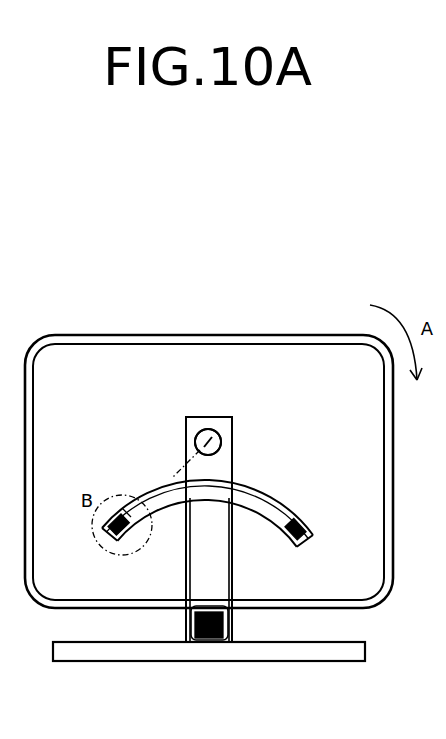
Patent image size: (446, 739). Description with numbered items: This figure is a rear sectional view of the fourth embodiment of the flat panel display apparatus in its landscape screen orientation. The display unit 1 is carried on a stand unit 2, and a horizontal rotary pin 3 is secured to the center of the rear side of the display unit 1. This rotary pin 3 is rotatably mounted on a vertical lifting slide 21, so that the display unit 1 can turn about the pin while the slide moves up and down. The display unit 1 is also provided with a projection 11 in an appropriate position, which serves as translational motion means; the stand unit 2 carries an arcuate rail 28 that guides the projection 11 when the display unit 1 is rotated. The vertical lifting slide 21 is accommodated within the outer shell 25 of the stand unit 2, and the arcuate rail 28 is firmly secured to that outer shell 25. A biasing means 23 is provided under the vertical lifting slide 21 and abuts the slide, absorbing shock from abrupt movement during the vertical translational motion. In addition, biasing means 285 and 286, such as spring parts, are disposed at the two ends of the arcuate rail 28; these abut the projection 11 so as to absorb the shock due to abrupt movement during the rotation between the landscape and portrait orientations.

The display unit 1 is at (121, 349).
The stand unit 2 is at (118, 653).
The horizontal rotary pin 3 is at (210, 429).
The projection 11 is at (128, 508).
The vertical lifting slide 21 is at (232, 432).
The biasing means 23 is at (232, 620).
The outer shell 25 is at (232, 567).
The arcuate rail 28 is at (265, 492).
The biasing means 285 is at (102, 528).
The biasing means 286 is at (305, 525).